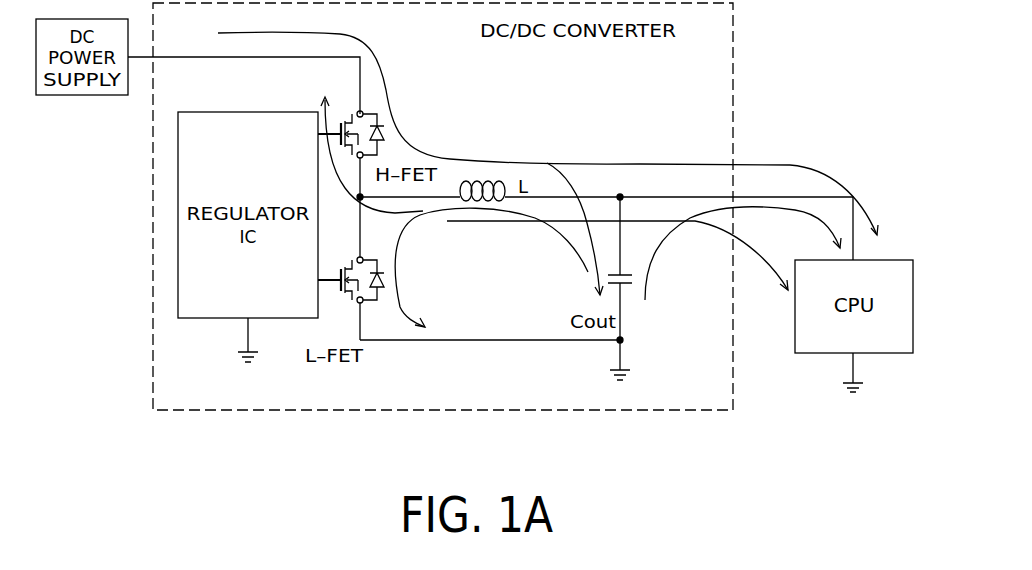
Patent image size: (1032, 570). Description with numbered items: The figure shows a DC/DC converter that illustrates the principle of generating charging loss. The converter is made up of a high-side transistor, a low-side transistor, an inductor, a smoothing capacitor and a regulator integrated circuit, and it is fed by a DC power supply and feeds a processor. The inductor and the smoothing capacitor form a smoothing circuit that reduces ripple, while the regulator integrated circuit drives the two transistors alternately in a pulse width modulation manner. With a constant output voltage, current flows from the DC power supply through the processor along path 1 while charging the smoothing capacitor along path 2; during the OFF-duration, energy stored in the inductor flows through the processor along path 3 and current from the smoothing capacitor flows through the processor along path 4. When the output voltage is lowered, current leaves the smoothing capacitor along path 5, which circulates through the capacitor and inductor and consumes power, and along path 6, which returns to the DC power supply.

The path 1 is at (820, 168).
The path 2 is at (577, 184).
The path 3 is at (702, 223).
The path 4 is at (830, 226).
The path 5 is at (402, 305).
The path 6 is at (370, 208).